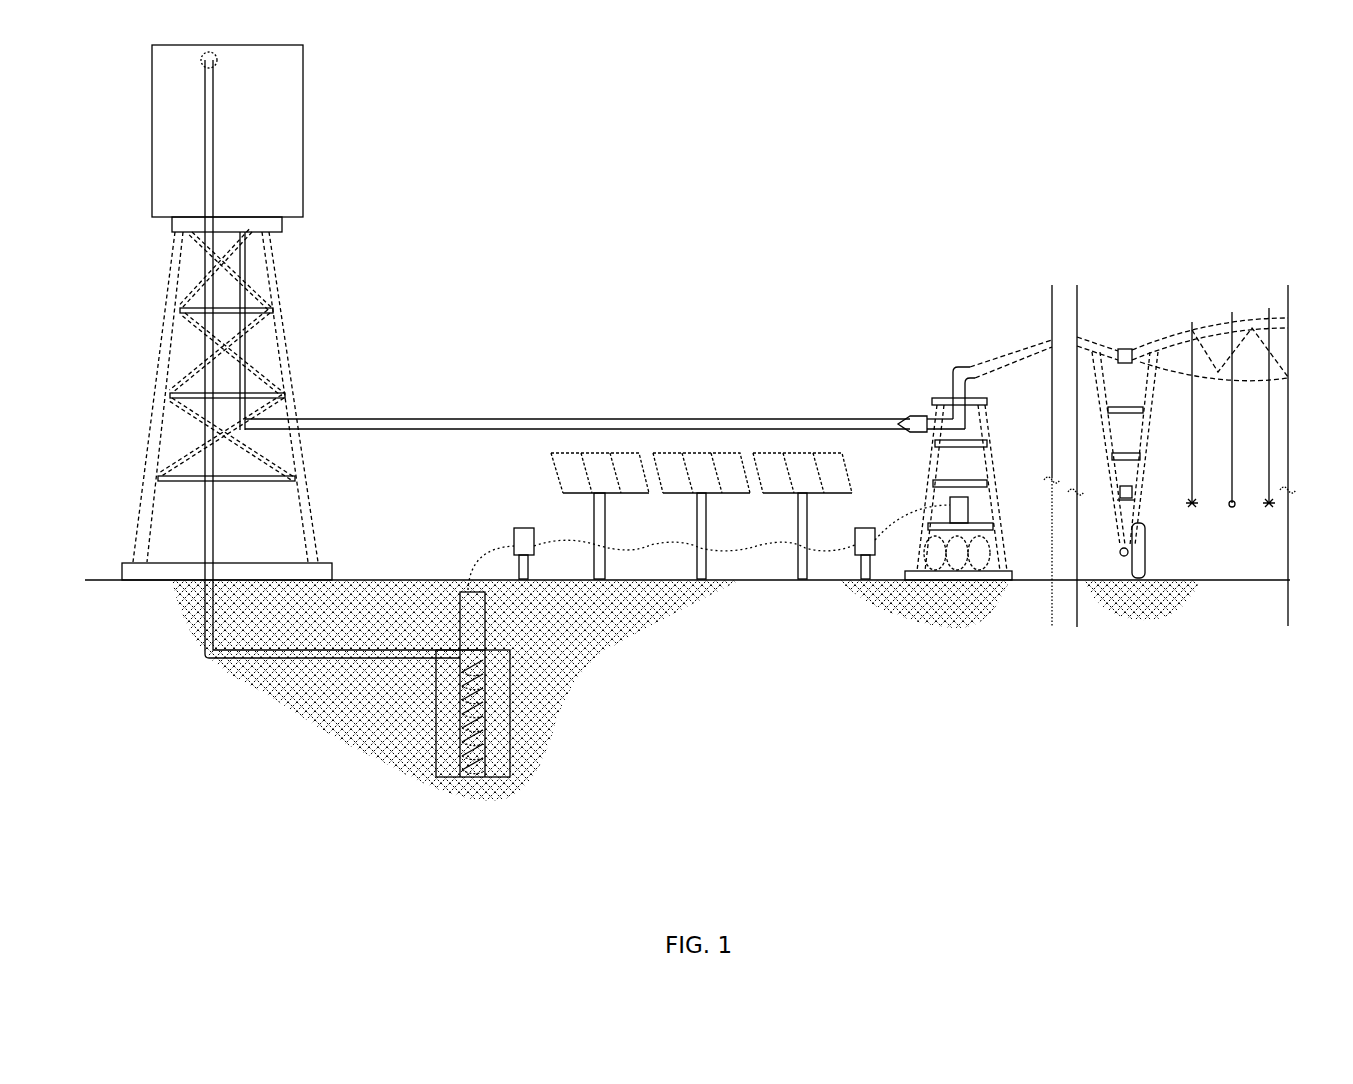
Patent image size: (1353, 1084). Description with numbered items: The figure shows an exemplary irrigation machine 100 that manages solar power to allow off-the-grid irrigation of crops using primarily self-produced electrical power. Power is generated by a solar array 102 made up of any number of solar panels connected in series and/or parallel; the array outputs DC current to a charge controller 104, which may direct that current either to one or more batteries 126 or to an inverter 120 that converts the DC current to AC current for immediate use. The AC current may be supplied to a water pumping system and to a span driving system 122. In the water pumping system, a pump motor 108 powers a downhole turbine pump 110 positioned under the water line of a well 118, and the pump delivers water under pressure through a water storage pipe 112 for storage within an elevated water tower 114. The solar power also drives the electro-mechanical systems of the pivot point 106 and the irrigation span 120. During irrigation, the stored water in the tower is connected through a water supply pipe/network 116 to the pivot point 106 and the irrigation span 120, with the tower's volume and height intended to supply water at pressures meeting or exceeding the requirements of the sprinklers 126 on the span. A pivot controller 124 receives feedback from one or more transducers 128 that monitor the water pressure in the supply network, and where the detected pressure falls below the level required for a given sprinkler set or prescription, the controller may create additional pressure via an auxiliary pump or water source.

The irrigation machine 100 is at (792, 135).
The solar array 102 is at (732, 462).
The charge controller 104 is at (528, 528).
The pivot point 106 is at (935, 400).
The pump motor 108 is at (472, 610).
The downhole turbine pump 110 is at (470, 705).
The water storage pipe 112 is at (205, 625).
The elevated water tower 114 is at (285, 136).
The water supply pipe/network 116 is at (508, 419).
The well 118 is at (485, 612).
The irrigation span 120 is at (865, 528).
The span driving system 122 is at (1117, 497).
The pivot controller 124 is at (960, 515).
The sprinklers 126 is at (947, 553).
The transducer 128 is at (905, 418).